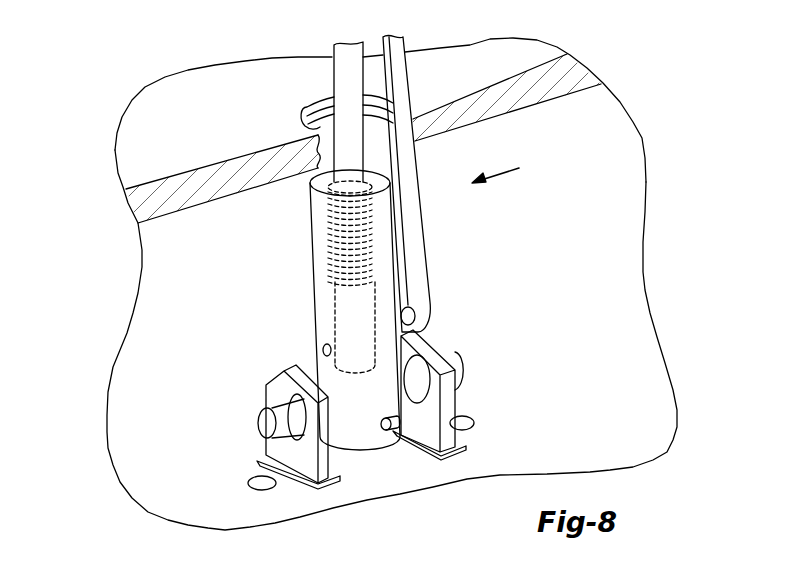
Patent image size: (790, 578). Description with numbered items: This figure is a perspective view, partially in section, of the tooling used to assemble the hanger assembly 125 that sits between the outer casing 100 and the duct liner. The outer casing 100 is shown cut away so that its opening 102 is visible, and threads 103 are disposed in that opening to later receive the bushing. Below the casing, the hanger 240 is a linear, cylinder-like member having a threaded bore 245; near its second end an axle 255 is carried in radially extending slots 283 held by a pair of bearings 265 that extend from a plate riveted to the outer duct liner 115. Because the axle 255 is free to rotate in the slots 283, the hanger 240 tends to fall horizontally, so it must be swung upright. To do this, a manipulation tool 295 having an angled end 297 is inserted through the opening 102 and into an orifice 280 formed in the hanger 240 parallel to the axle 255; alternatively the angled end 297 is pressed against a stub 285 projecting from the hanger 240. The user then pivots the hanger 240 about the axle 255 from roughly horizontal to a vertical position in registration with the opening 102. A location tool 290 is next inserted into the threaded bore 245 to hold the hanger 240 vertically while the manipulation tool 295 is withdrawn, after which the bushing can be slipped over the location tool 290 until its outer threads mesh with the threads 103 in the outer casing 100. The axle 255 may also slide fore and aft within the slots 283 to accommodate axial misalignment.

The outer casing 100 is at (182, 131).
The opening 102 is at (318, 134).
The threads 103 is at (313, 107).
The outer duct liner 115 is at (569, 224).
The hanger assembly 125 is at (508, 168).
The hanger 240 is at (313, 291).
The threaded bore 245 is at (330, 232).
The axle 255 is at (266, 422).
The bearings 265 is at (264, 455).
The orifice 280 is at (323, 352).
The slot 283 is at (282, 390).
The stub 285 is at (399, 430).
The location tool 290 is at (333, 81).
The manipulation tool 295 is at (405, 75).
The angled end 297 is at (432, 329).